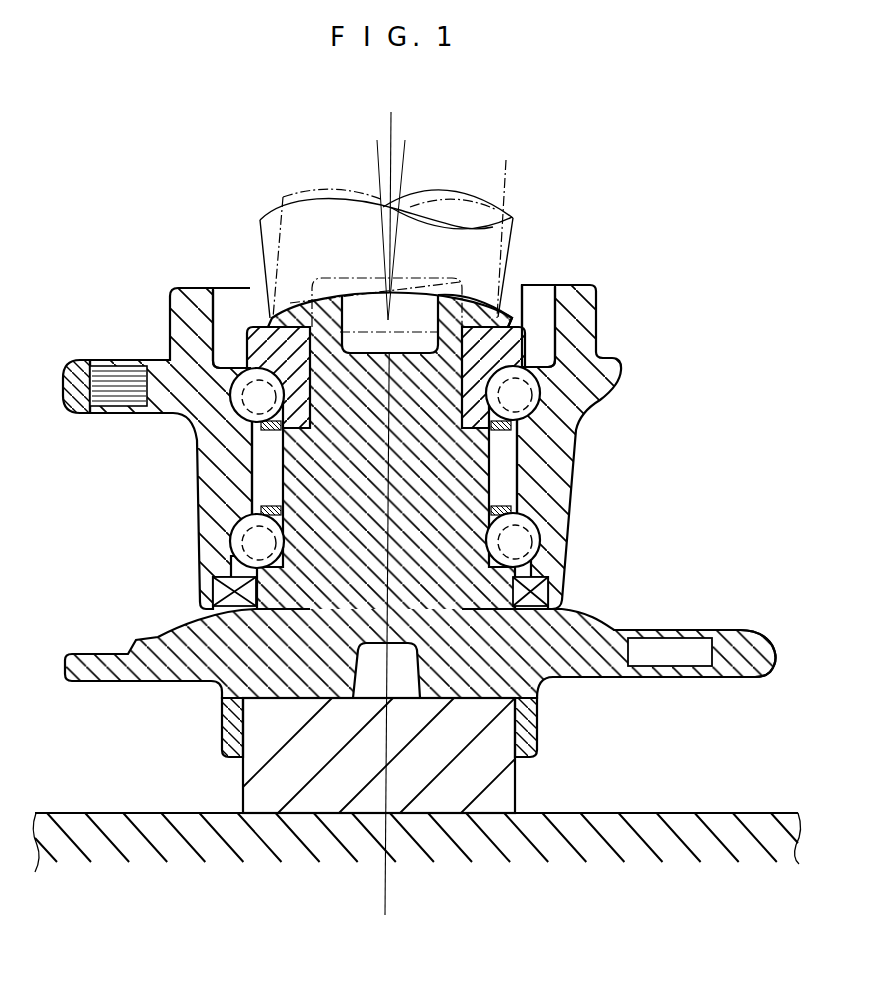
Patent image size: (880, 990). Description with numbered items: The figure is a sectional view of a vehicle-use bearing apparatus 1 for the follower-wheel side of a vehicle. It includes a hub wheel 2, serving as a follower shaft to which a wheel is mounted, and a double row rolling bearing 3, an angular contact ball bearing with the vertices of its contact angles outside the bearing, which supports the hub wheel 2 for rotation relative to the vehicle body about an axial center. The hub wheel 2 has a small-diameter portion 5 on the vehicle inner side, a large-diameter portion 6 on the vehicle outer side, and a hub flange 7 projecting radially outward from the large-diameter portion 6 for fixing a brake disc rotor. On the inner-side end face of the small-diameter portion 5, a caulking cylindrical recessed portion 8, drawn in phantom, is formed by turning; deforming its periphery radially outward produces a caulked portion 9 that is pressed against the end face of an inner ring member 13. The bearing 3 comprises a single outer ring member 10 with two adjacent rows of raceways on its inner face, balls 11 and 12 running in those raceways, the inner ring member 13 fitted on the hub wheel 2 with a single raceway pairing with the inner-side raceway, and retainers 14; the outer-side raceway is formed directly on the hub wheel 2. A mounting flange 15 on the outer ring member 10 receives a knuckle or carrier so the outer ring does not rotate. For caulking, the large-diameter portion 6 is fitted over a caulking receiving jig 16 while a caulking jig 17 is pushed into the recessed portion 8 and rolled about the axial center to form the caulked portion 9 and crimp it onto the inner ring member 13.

The vehicle-use bearing apparatus 1 is at (416, 444).
The hub wheel 2 is at (497, 466).
The double row rolling bearing 3 is at (603, 313).
The small-diameter portion 5 is at (464, 488).
The large-diameter portion 6 is at (230, 738).
The hub flange 7 is at (757, 638).
The caulking cylindrical recessed portion 8 is at (346, 276).
The caulked portion 9 is at (495, 318).
The outer ring member 10 is at (204, 515).
The balls 11 is at (533, 404).
The balls 12 is at (537, 540).
The inner ring member 13 is at (249, 326).
The retainers 14 is at (255, 492).
The mounting flange 15 is at (74, 374).
The caulking receiving jig 16 is at (313, 808).
The caulking jig 17 is at (470, 282).